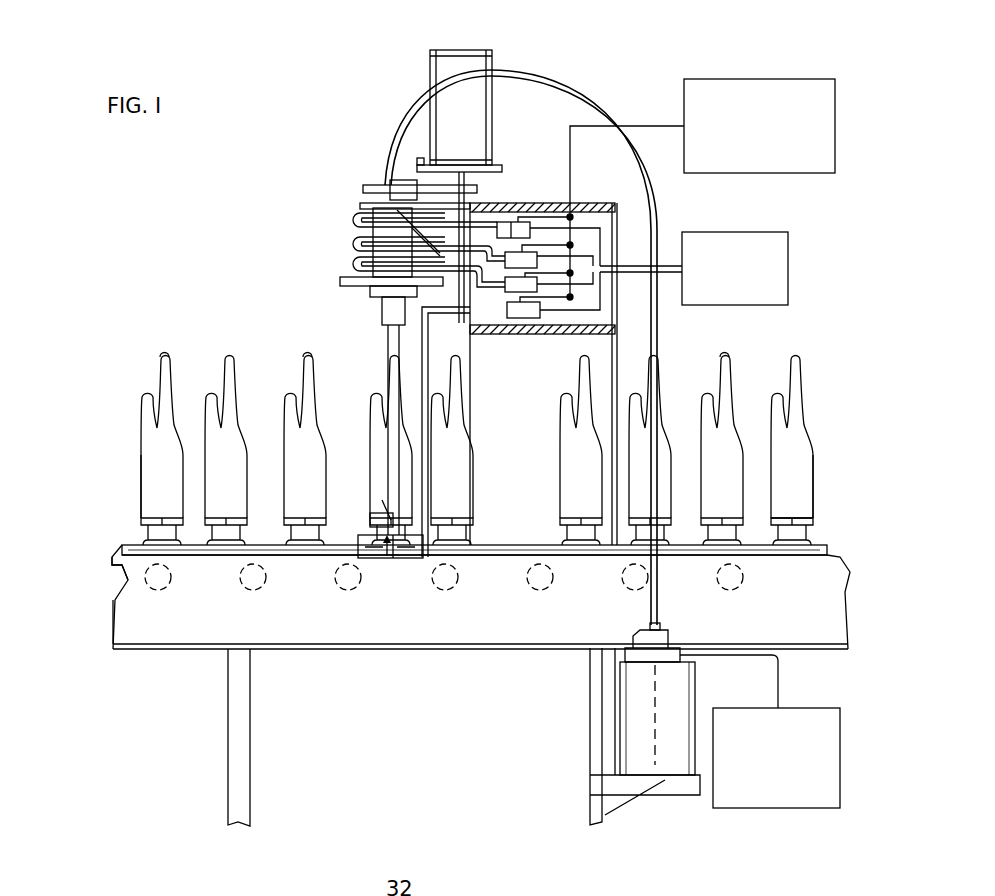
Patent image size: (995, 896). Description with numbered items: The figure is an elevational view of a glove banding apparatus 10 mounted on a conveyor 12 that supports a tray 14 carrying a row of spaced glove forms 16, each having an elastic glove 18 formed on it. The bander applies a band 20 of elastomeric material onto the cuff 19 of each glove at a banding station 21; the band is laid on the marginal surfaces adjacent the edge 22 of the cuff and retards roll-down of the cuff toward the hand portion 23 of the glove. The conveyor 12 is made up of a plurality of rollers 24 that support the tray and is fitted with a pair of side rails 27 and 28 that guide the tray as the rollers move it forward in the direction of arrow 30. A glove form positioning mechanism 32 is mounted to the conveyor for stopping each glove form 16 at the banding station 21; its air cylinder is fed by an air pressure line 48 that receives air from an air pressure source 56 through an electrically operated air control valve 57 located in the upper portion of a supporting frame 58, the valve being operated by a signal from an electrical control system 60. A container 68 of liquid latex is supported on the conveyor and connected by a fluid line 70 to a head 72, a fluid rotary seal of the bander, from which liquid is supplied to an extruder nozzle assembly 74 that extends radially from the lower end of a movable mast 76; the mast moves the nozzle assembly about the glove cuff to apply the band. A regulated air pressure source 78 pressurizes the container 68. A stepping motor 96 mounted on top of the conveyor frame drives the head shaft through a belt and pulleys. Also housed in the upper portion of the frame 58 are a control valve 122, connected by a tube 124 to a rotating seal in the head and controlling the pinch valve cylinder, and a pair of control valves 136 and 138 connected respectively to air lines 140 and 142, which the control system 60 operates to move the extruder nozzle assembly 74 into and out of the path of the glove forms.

The glove banding apparatus 10 is at (594, 60).
The conveyor 12 is at (149, 654).
The tray 14 is at (128, 545).
The glove form 16 is at (287, 533).
The elastic glove 18 is at (297, 447).
The cuff 19 is at (147, 505).
The band 20 is at (212, 522).
The banding station 21 is at (326, 132).
The edge 22 is at (800, 525).
The hand portion 23 is at (155, 385).
The rollers 24 is at (258, 590).
The side rail 27 is at (120, 572).
The side rail 28 is at (127, 612).
The arrow 30 is at (112, 472).
The glove form positioning mechanism 32 is at (403, 560).
The air pressure line 48 is at (460, 354).
The air pressure source 56 is at (785, 267).
The air control valve 57 is at (525, 318).
The supporting frame 58 is at (590, 203).
The electrical control system 60 is at (773, 78).
The container 68 is at (668, 760).
The fluid line 70 is at (590, 102).
The head 72 is at (381, 197).
The extruder nozzle assembly 74 is at (387, 560).
The mast 76 is at (392, 393).
The regulated air pressure source 78 is at (837, 749).
The stepping motor 96 is at (493, 55).
The control valve 122 is at (510, 222).
The tube 124 is at (362, 218).
The control valve 136 is at (513, 252).
The control valve 138 is at (512, 292).
The air line 140 is at (358, 243).
The air line 142 is at (356, 262).